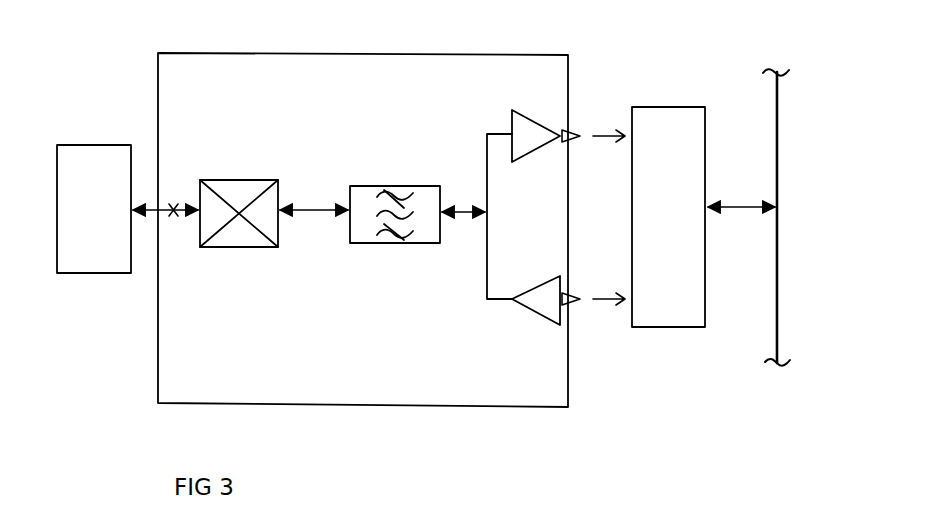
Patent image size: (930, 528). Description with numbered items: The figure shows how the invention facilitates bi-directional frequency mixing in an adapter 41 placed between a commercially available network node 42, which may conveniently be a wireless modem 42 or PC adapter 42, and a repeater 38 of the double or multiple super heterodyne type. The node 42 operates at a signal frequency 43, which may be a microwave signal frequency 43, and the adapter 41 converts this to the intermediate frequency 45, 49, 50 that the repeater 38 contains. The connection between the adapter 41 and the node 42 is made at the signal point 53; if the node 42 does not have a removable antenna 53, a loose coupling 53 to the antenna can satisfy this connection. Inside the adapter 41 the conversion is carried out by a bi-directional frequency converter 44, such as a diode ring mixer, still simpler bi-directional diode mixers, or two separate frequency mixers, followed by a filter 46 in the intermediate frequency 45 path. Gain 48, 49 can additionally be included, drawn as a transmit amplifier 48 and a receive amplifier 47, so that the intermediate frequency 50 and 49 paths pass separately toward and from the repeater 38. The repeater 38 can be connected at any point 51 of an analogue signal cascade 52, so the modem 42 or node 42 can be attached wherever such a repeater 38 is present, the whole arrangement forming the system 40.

The repeater 38 is at (660, 334).
The radio system 40 is at (673, 449).
The adapter 41 is at (493, 416).
The network node 42 is at (77, 279).
The signal frequency 43 is at (173, 205).
The bi-directional frequency converter 44 is at (240, 179).
The intermediate frequency 45 is at (317, 226).
The filter 46 is at (388, 190).
The receive amplifier 47 is at (520, 313).
The gain 48 is at (560, 124).
The gain 49 is at (613, 303).
The intermediate frequency 50 is at (614, 146).
The connection point 51 is at (746, 200).
The analogue signal cascade 52 is at (771, 318).
The signal point 53 is at (141, 225).